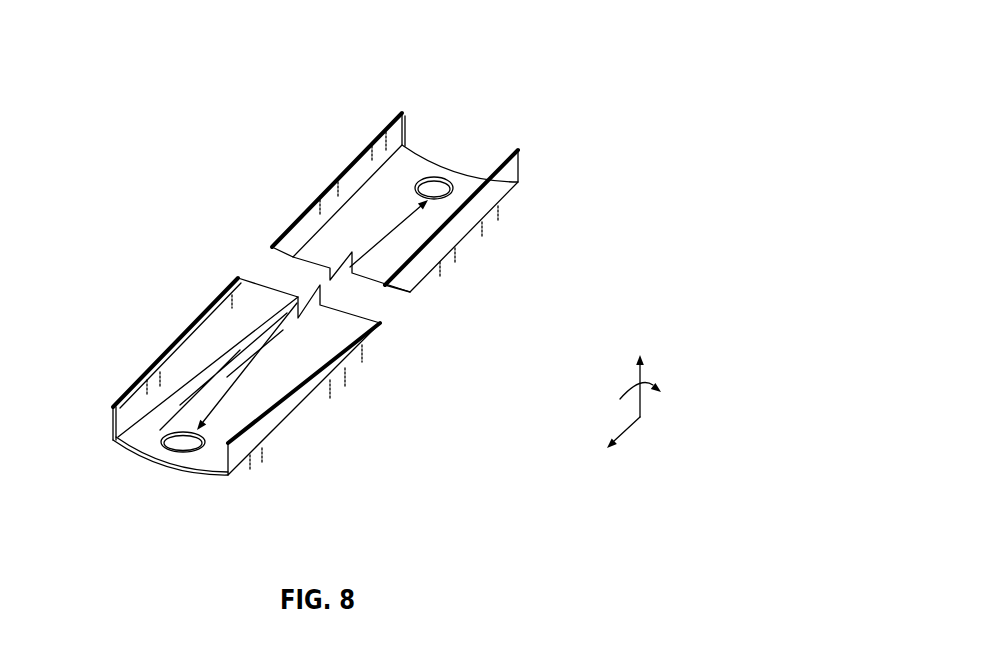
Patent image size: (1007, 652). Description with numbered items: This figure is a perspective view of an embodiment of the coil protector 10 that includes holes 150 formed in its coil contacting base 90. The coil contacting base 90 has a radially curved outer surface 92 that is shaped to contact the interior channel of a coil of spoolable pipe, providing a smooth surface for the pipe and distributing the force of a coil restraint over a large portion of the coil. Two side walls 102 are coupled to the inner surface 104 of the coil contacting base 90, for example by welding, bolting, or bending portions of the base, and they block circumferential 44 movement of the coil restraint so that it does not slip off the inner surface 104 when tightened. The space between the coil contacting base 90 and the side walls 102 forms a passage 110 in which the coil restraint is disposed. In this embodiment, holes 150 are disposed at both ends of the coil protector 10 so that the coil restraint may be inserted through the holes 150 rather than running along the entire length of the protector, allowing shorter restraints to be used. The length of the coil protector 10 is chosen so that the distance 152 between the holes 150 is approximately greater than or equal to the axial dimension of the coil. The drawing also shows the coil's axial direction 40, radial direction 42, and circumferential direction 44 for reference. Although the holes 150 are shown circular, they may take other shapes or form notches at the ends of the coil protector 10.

The coil protector 10 is at (521, 43).
The passage 110 is at (436, 136).
The coil contacting base 90 is at (215, 466).
The outer surface 92 is at (142, 460).
The side walls 102 is at (140, 384).
The inner surface 104 is at (287, 368).
The holes 150 is at (446, 178).
The distance between the holes 152 is at (257, 370).
The axial axis or direction 40 is at (627, 432).
The radial axis or direction 42 is at (643, 398).
The circumferential axis or direction 44 is at (637, 383).